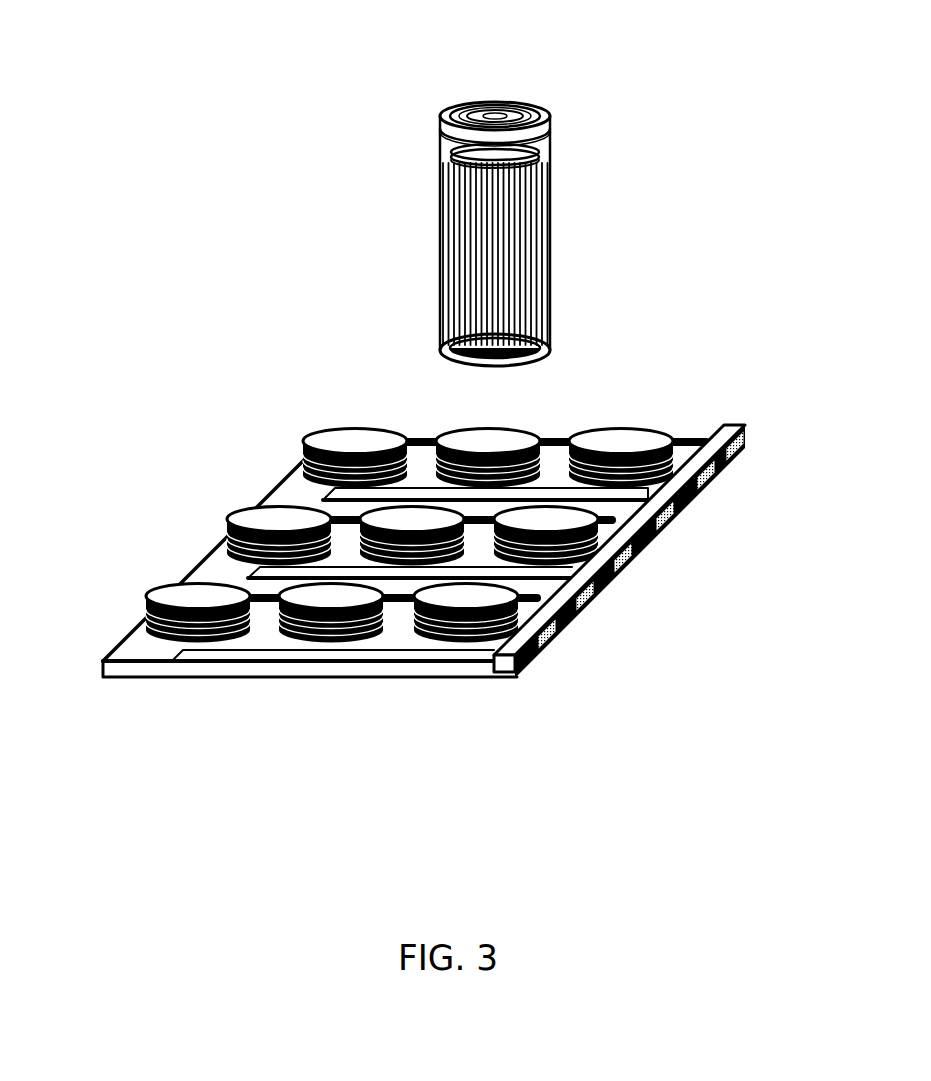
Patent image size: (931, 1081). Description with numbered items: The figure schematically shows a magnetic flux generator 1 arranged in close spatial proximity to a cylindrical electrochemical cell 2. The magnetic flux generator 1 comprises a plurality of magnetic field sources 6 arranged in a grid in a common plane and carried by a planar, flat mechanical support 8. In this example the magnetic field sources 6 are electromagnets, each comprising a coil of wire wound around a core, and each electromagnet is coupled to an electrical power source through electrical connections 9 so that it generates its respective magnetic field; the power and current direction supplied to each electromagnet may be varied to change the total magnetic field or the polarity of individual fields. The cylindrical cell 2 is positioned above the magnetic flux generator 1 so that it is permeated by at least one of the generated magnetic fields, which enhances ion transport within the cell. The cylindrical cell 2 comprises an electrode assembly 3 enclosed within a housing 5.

The magnetic flux generator 1 is at (134, 493).
The cylindrical cell 2 is at (380, 184).
The electrode assembly 3 is at (517, 208).
The housing 5 is at (491, 112).
The magnetic field sources 6 is at (643, 437).
The mechanical support 8 is at (728, 430).
The electrical connections 9 is at (322, 498).